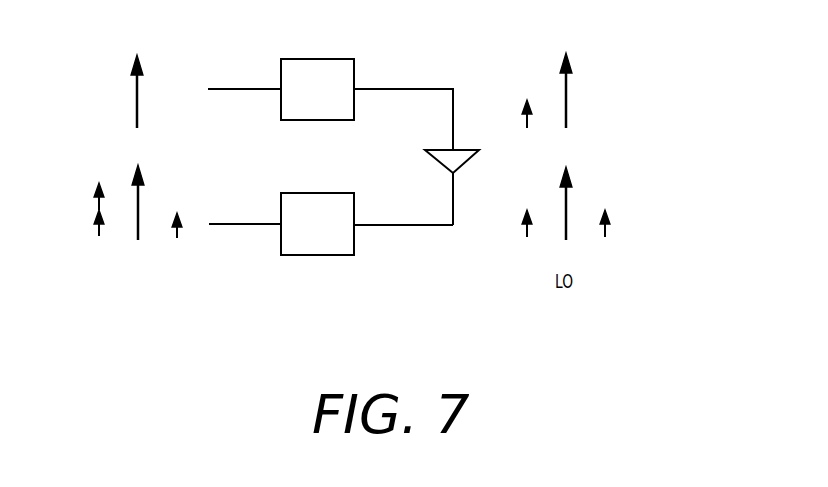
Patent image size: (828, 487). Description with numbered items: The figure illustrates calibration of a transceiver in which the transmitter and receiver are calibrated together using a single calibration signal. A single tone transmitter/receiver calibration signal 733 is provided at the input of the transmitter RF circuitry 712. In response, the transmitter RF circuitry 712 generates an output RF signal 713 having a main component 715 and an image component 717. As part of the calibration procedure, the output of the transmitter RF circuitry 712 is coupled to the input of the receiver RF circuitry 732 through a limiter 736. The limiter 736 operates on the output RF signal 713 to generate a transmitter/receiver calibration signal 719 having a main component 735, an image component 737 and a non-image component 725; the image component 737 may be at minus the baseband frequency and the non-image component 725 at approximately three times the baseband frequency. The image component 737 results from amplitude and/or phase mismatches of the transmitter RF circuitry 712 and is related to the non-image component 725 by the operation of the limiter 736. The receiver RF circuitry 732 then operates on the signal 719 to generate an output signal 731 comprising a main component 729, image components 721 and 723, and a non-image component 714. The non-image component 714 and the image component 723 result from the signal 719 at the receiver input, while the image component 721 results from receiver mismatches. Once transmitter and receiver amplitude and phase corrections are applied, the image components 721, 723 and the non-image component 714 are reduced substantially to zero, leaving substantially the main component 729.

The transmitter RF circuitry 712 is at (335, 59).
The receiver RF circuitry 732 is at (335, 193).
The transmitter/receiver calibration signal 733 is at (246, 89).
The output RF signal 713 is at (396, 89).
The limiter 736 is at (466, 162).
The transmitter/receiver calibration signal 719 is at (396, 225).
The output signal 731 is at (246, 224).
The image component 717 is at (520, 122).
The main component 715 is at (567, 98).
The main component 735 is at (567, 197).
The image component 737 is at (524, 236).
The non-image component 725 is at (605, 238).
The image component 723 is at (95, 207).
The image component 721 is at (95, 235).
The main component 729 is at (139, 193).
The non-image component 714 is at (174, 237).